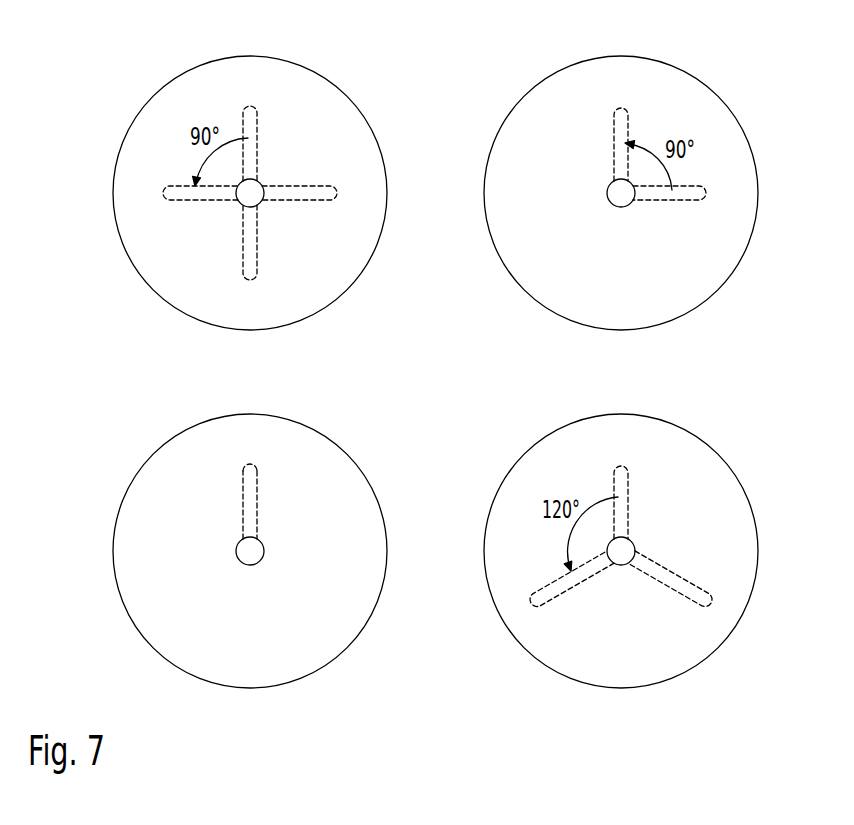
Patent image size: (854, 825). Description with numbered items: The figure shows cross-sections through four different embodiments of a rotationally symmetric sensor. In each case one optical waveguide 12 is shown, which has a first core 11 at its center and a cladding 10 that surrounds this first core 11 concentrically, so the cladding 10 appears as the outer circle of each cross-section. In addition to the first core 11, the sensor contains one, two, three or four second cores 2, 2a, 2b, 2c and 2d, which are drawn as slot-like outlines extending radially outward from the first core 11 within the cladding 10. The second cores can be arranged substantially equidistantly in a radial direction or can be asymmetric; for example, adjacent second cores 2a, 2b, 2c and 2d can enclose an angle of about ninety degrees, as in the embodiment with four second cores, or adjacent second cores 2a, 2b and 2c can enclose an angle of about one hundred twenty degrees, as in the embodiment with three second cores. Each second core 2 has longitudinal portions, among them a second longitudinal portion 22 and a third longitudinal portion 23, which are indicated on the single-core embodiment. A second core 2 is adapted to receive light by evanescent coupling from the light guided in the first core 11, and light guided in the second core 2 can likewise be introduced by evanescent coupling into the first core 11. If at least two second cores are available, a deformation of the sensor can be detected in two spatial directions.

The second core 2 is at (254, 450).
The second core 2a is at (247, 106).
The second core 2b is at (330, 193).
The second core 2c is at (247, 273).
The second core 2d is at (168, 193).
The cladding 10 is at (328, 285).
The first core 11 is at (252, 192).
The optical waveguide 12 is at (449, 362).
The second longitudinal portion 22 is at (243, 507).
The third longitudinal portion 23 is at (248, 463).